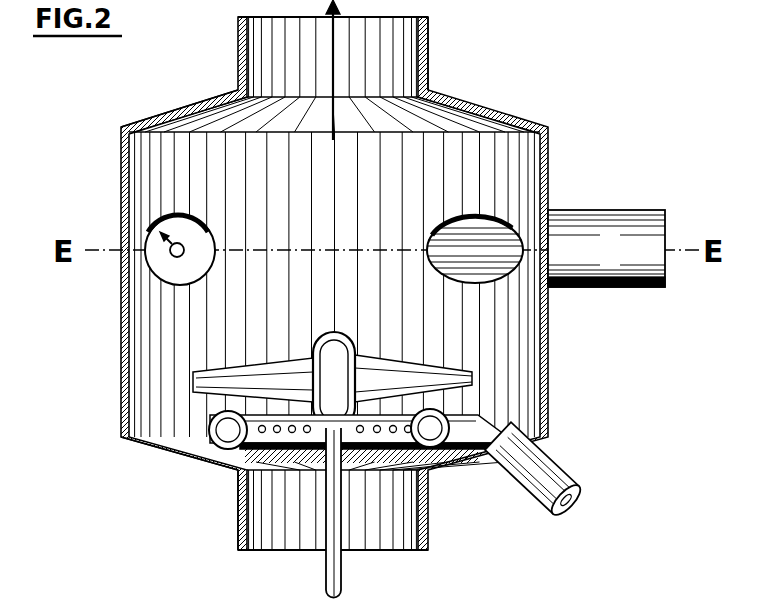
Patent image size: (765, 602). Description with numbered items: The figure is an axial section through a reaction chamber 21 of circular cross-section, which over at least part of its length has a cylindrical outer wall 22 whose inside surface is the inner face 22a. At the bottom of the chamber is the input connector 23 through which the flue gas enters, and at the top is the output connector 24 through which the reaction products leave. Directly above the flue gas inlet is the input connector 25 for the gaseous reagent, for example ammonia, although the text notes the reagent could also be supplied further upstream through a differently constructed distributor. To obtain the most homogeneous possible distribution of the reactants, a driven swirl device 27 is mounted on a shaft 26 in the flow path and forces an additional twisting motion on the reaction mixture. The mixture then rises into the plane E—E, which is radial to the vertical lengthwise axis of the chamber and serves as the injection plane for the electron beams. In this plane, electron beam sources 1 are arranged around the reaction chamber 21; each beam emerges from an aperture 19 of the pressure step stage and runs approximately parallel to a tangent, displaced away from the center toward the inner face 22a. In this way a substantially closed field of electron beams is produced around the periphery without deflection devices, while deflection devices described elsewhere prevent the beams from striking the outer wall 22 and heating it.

The electron beam source 1 is at (613, 226).
The aperture 19 is at (155, 232).
The reaction chamber 21 is at (364, 283).
The cylindrical outer wall 22 is at (550, 353).
The inner face of the cylindrical outer wall 22a is at (132, 148).
The input connector 23 is at (240, 519).
The output connector 24 is at (429, 60).
The input connector for the gaseous reagent 25 is at (240, 478).
The shaft 26 is at (343, 572).
The swirl device 27 is at (193, 382).